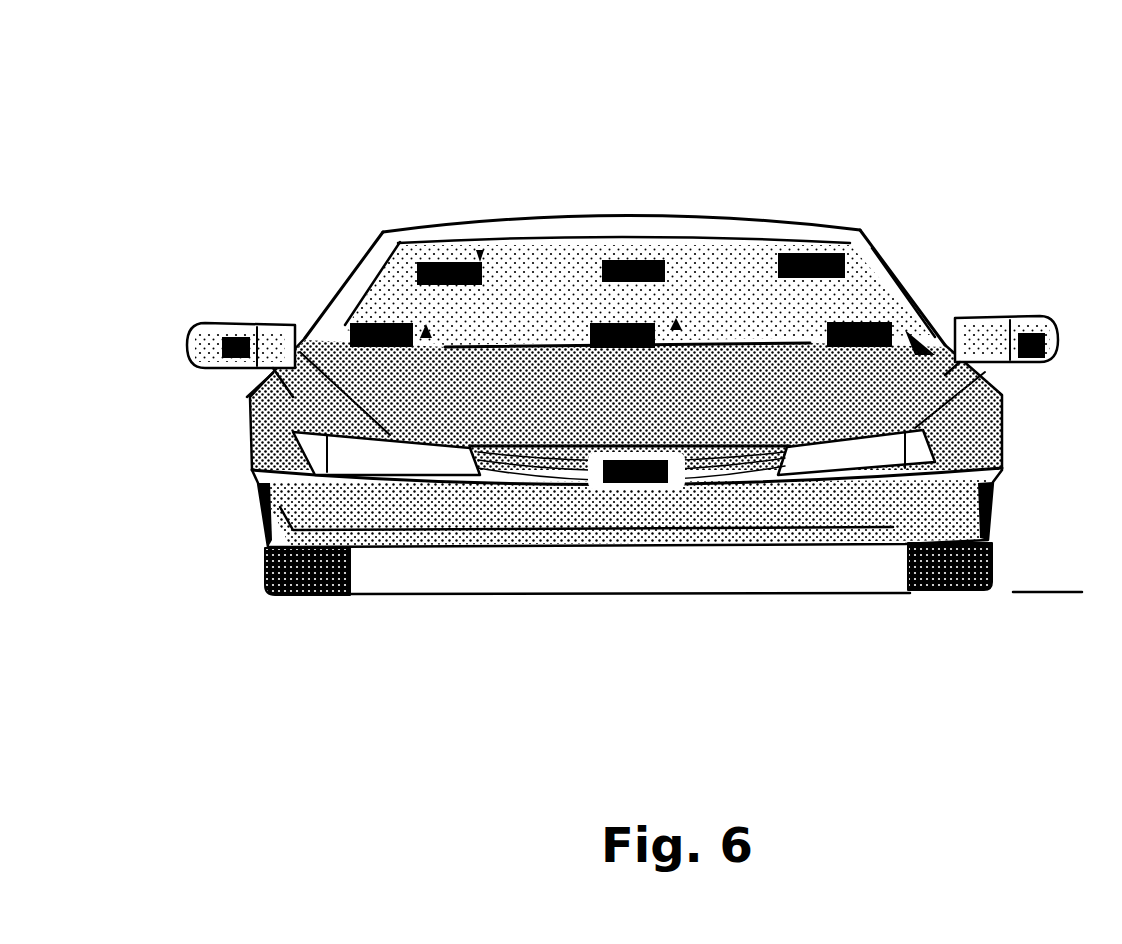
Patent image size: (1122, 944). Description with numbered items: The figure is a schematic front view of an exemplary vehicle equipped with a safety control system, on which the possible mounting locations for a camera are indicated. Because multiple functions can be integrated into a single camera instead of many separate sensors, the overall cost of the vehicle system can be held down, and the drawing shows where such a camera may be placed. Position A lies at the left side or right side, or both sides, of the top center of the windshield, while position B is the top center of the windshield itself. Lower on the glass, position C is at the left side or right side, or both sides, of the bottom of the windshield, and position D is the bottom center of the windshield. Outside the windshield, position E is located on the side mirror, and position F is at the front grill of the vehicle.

The camera position A is at (862, 233).
The camera position B is at (645, 228).
The camera position C is at (913, 293).
The camera position D is at (790, 315).
The camera position E is at (1033, 365).
The camera position F is at (1000, 550).